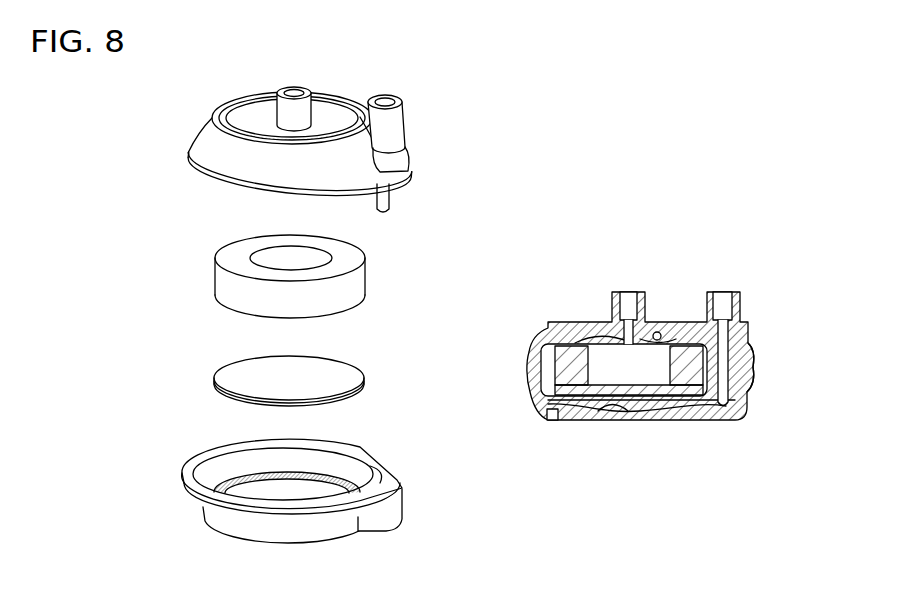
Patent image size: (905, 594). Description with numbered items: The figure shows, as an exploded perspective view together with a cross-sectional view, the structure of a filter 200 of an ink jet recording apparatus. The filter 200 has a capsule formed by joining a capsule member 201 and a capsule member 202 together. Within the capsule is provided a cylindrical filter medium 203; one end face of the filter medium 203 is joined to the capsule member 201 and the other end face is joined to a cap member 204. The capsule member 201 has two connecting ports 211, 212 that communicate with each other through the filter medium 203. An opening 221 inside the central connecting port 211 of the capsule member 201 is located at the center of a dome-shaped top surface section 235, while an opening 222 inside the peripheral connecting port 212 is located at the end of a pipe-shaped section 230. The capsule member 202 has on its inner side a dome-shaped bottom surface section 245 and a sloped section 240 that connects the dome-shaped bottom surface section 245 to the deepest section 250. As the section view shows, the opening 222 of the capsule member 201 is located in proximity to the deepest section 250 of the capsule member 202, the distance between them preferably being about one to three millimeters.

The filter 200 is at (693, 272).
The capsule member 201 is at (206, 149).
The capsule member 202 is at (183, 472).
The filter medium 203 is at (222, 276).
The cap member 204 is at (216, 378).
The connecting port 211 is at (613, 298).
The connecting port 212 is at (742, 298).
The opening 221 is at (615, 344).
The opening 222 is at (737, 420).
The pipe-shaped section 230 is at (745, 388).
The dome-shaped top surface section 235 is at (657, 332).
The sloped section 240 is at (663, 404).
The dome-shaped bottom surface section 245 is at (613, 402).
The deepest section 250 is at (722, 408).